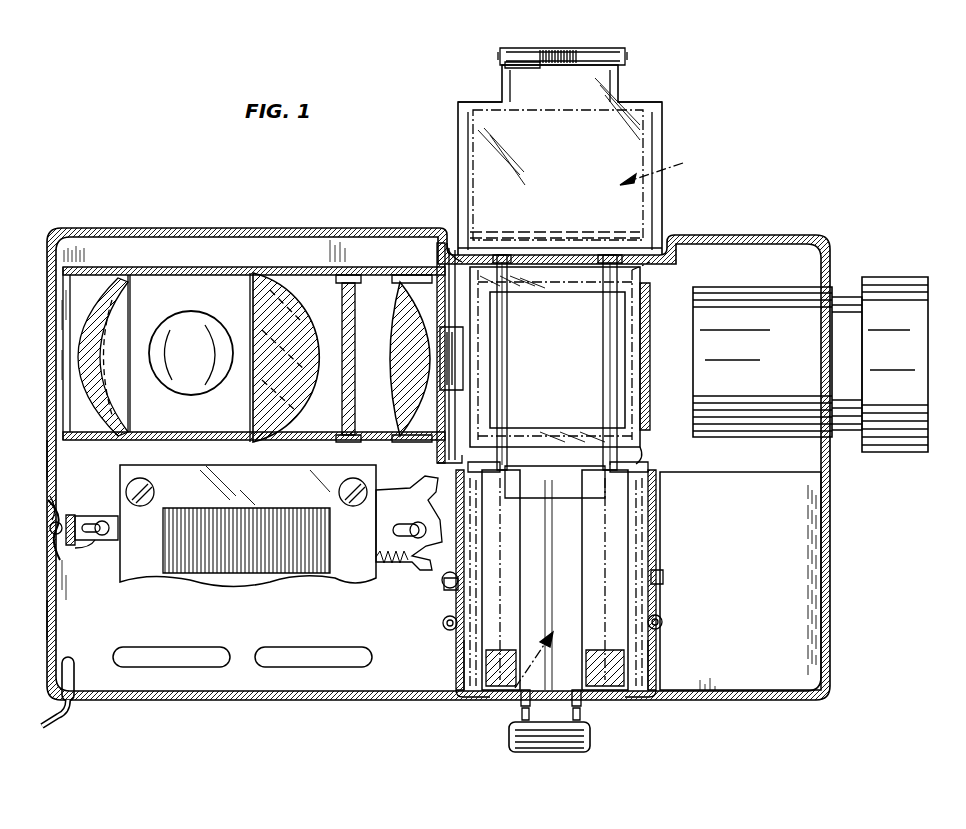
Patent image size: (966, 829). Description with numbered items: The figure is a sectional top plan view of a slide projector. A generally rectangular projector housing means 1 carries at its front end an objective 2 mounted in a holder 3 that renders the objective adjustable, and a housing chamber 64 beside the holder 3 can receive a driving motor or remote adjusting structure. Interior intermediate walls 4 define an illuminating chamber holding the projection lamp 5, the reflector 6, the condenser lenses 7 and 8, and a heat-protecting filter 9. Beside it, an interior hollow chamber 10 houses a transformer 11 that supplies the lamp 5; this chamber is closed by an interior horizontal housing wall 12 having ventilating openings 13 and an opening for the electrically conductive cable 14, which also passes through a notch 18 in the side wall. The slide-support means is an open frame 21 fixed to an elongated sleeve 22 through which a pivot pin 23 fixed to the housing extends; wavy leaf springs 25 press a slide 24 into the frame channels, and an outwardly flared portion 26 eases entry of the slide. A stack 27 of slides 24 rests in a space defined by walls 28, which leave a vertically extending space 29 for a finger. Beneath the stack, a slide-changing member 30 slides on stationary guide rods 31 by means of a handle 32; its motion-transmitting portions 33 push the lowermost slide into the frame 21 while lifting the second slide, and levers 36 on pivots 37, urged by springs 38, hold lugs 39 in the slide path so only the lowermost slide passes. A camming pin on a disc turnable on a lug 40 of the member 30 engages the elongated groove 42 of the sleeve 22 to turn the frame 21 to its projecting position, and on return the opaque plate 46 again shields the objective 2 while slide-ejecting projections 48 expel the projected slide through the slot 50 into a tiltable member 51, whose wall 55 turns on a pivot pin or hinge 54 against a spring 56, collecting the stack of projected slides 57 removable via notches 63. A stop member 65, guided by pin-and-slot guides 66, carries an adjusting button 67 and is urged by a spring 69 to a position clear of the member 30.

The projector housing means 1 is at (176, 228).
The objective 2 is at (912, 318).
The holder 3 is at (776, 298).
The interior intermediate walls 4 is at (240, 268).
The projection lamp 5 is at (180, 334).
The reflector 6 is at (122, 386).
The condenser lens 7 is at (262, 318).
The condenser lens 8 is at (398, 408).
The filter 9 is at (342, 408).
The interior hollow chamber 10 is at (52, 456).
The transformer 11 is at (228, 484).
The interior horizontal housing wall 12 is at (52, 614).
The ventilating openings 13 is at (226, 652).
The electrically conductive cable 14 is at (70, 710).
The notch 18 is at (75, 666).
The open frame 21 is at (641, 353).
The elongated sleeve 22 is at (455, 340).
The pivot pin 23 is at (438, 272).
The slide 24 is at (650, 80).
The wavy leaf springs 25 is at (650, 300).
The outwardly flared portion 26 is at (641, 463).
The stack 27 is at (512, 698).
The walls 28 is at (480, 643).
The vertically extending space 29 is at (592, 700).
The slide-changing member 30 is at (558, 692).
The stationary guide rods 31 is at (608, 334).
The handle 32 is at (530, 753).
The motion-transmitting portions 33 is at (524, 658).
The levers 36 is at (456, 481).
The pivots 37 is at (445, 586).
The springs 38 is at (444, 628).
The lugs 39 is at (492, 464).
The lug 40 is at (442, 578).
The elongated groove 42 is at (463, 355).
The opaque plate 46 is at (650, 372).
The slide-ejecting projections 48 is at (604, 480).
The slot 50 is at (642, 254).
The tiltable member 51 is at (655, 135).
The pivot pin or hinge 54 is at (512, 50).
The wall 55 is at (525, 67).
The spring 56 is at (568, 65).
The stack of projected slides 57 is at (665, 166).
The notches 63 is at (492, 93).
The housing chamber 64 is at (826, 563).
The stop member 65 is at (78, 546).
The pin-and-slot guides 66 is at (104, 521).
The adjusting button 67 is at (50, 522).
The spring 69 is at (388, 563).